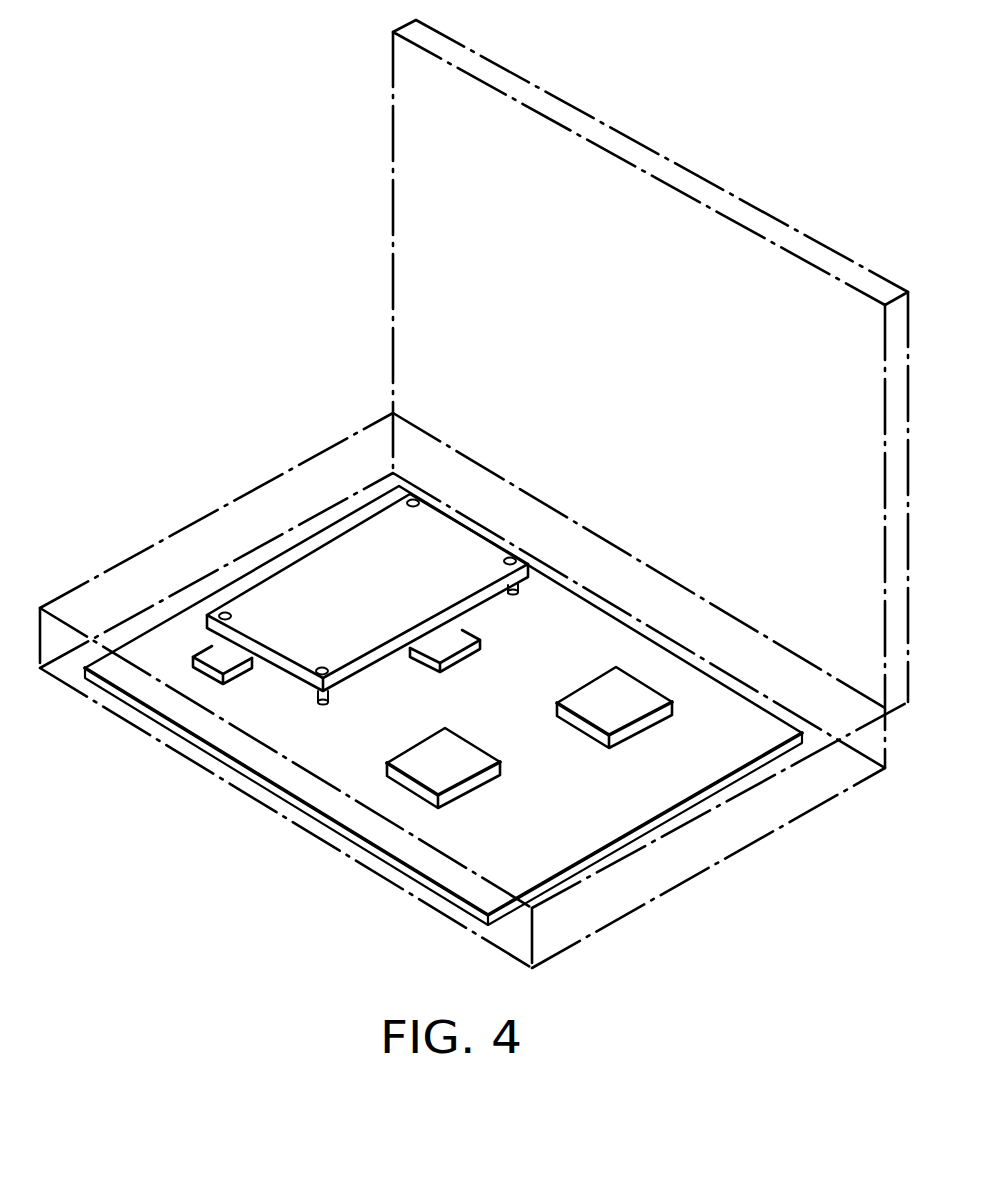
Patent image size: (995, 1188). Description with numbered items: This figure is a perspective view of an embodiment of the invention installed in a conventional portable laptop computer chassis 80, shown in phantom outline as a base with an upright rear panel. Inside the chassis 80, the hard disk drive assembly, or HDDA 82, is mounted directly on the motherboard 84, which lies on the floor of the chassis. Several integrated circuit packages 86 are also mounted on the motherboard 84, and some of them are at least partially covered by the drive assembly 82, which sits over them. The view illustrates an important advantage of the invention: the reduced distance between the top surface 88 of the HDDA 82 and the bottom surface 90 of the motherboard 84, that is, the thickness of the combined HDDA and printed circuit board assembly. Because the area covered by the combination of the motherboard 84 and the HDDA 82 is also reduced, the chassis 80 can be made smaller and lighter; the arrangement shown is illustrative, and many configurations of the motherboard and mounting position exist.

The laptop computer chassis 80 is at (177, 532).
The HDDA 82 is at (371, 588).
The motherboard 84 is at (583, 632).
The integrated circuit packages 86 is at (204, 651).
The top surface 88 is at (310, 573).
The bottom surface 90 is at (450, 906).